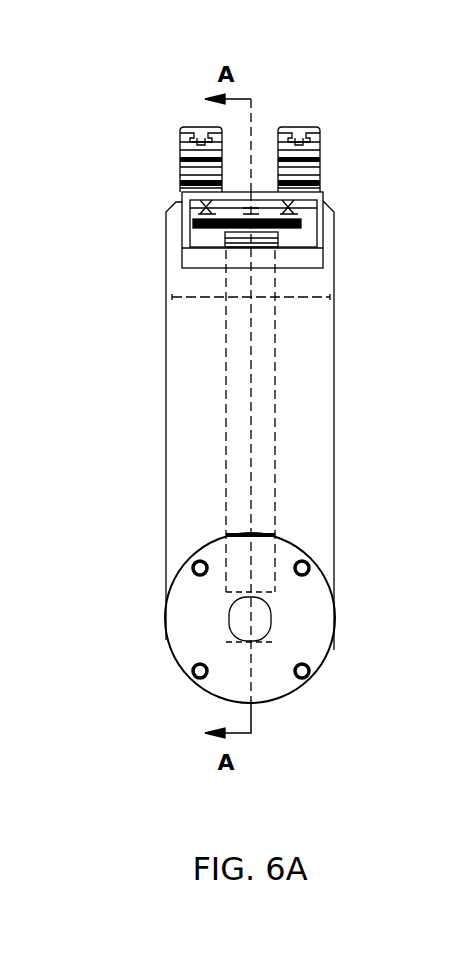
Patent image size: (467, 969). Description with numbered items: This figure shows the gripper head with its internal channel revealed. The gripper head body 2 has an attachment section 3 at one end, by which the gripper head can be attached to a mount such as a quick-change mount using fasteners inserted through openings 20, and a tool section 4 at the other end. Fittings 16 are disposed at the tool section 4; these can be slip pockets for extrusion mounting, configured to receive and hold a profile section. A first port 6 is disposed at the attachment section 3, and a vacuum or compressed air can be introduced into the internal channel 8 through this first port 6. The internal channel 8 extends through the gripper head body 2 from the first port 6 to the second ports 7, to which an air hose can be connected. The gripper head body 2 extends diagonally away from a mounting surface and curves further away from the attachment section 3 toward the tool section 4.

The gripper head body 2 is at (300, 430).
The attachment section 3 is at (293, 700).
The tool section 4 is at (157, 193).
The first port 6 is at (262, 640).
The second port 7 is at (240, 192).
The internal channel 8 is at (273, 505).
The fitting 16 is at (180, 162).
The openings 20 is at (310, 566).